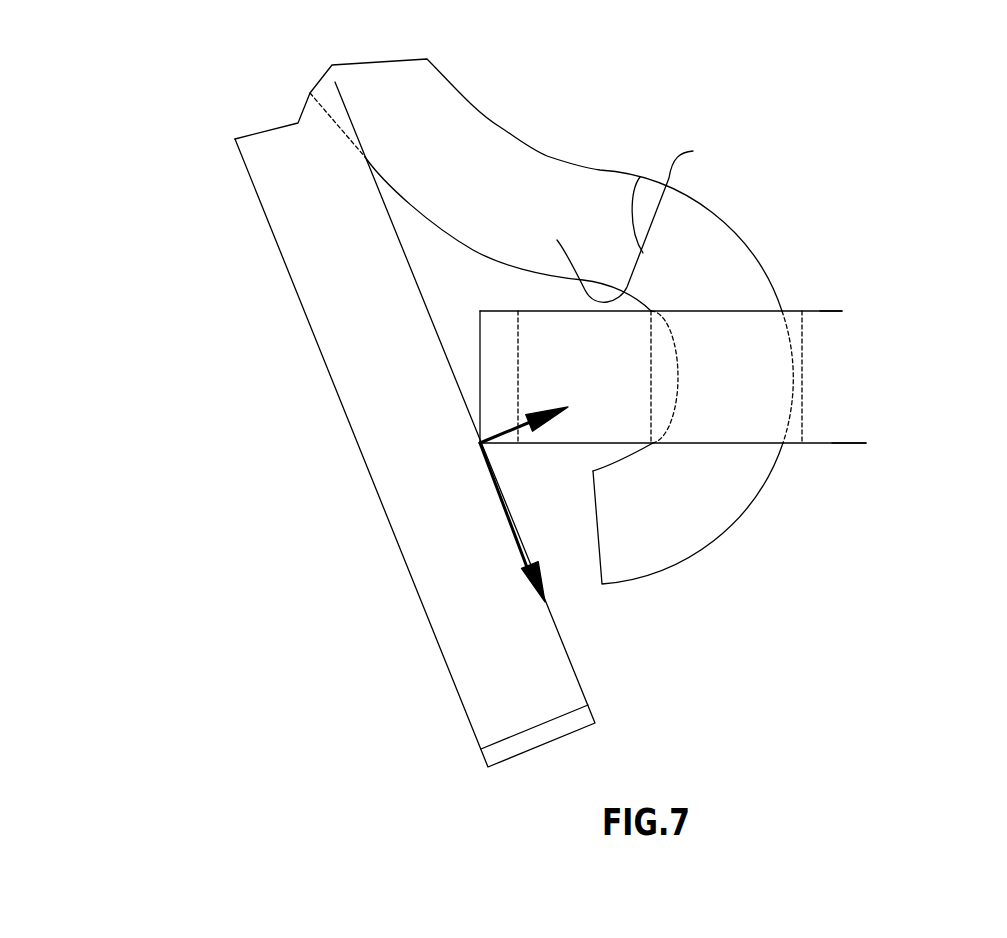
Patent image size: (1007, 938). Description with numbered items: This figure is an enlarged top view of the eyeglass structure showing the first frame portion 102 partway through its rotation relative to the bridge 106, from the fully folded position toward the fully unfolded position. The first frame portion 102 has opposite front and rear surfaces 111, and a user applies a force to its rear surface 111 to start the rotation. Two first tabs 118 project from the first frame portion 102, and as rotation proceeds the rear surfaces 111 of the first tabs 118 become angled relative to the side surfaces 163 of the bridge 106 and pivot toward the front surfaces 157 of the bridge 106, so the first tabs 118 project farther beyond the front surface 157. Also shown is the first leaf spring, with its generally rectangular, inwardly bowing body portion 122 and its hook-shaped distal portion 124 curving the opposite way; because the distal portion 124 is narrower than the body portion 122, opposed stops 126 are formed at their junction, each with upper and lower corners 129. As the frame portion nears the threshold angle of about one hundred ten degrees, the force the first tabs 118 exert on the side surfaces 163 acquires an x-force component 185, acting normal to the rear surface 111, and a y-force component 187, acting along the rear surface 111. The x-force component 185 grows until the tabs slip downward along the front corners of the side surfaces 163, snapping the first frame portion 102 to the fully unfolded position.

The first frame portion 102 is at (333, 424).
The bridge 106 is at (887, 392).
The front and rear surfaces 111 is at (405, 229).
The first tabs 118 is at (390, 367).
The body portion 122 is at (496, 173).
The distal portion 124 is at (653, 510).
The opposed stops 126 is at (640, 177).
The upper and lower corners 129 is at (557, 240).
The front and rear surfaces 157 is at (820, 311).
The side surfaces 163 is at (478, 337).
The x-force component 185 is at (498, 436).
The y-force component 187 is at (515, 530).